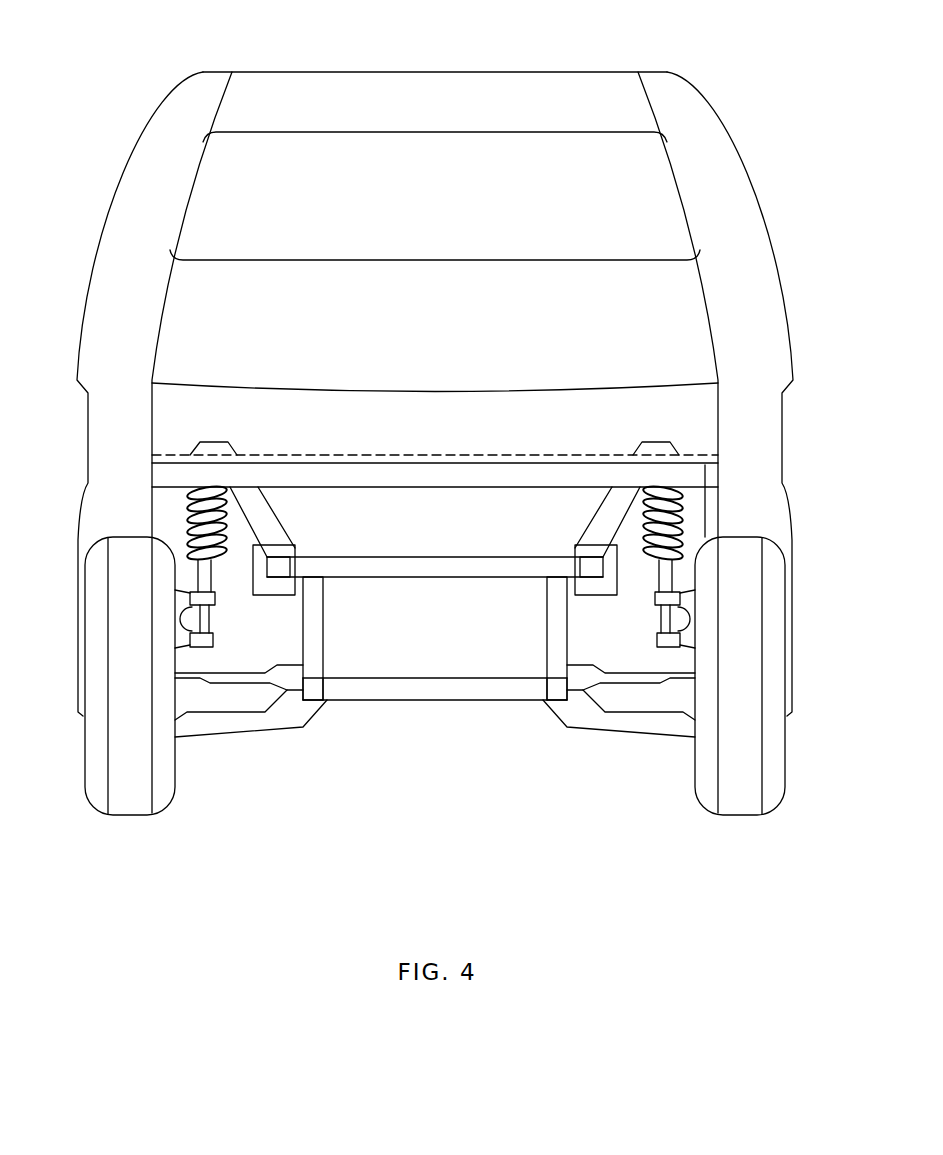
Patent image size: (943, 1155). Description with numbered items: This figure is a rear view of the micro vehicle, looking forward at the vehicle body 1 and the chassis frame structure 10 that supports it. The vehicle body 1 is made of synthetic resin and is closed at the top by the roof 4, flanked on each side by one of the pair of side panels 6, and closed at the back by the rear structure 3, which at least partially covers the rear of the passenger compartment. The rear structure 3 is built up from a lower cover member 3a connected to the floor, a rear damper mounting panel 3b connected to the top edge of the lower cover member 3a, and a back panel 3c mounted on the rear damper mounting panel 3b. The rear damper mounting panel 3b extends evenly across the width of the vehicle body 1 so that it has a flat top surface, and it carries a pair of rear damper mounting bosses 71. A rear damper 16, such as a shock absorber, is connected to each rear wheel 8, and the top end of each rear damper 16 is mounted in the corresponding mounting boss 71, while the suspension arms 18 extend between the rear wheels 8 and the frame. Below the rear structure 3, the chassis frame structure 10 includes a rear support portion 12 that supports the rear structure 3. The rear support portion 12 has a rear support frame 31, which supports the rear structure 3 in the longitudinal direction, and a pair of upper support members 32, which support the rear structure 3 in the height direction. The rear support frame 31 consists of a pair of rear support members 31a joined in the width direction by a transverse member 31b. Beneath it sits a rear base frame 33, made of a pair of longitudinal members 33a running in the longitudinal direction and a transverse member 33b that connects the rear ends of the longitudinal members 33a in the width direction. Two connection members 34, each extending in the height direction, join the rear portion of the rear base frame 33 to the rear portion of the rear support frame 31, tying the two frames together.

The vehicle body 1 is at (759, 187).
The rear structure 3 is at (435, 448).
The lower cover member 3a is at (467, 645).
The rear damper mounting panel 3b is at (406, 454).
The back panel 3c is at (326, 308).
The roof 4 is at (529, 100).
The side panel 6 is at (120, 296).
The rear wheel 8 is at (126, 816).
The chassis frame structure 10 is at (435, 650).
The rear support portion 12 is at (436, 615).
The rear damper 16 is at (178, 502).
The suspension arm 18 is at (242, 722).
The rear support frame 31 is at (436, 535).
The rear support member 31a is at (275, 567).
The transverse member 31b is at (393, 569).
The upper support member 32 is at (253, 502).
The rear base frame 33 is at (435, 730).
The longitudinal member 33a is at (313, 688).
The transverse member 33b is at (438, 689).
The connection member 34 is at (313, 622).
The rear damper mounting boss 71 is at (213, 441).